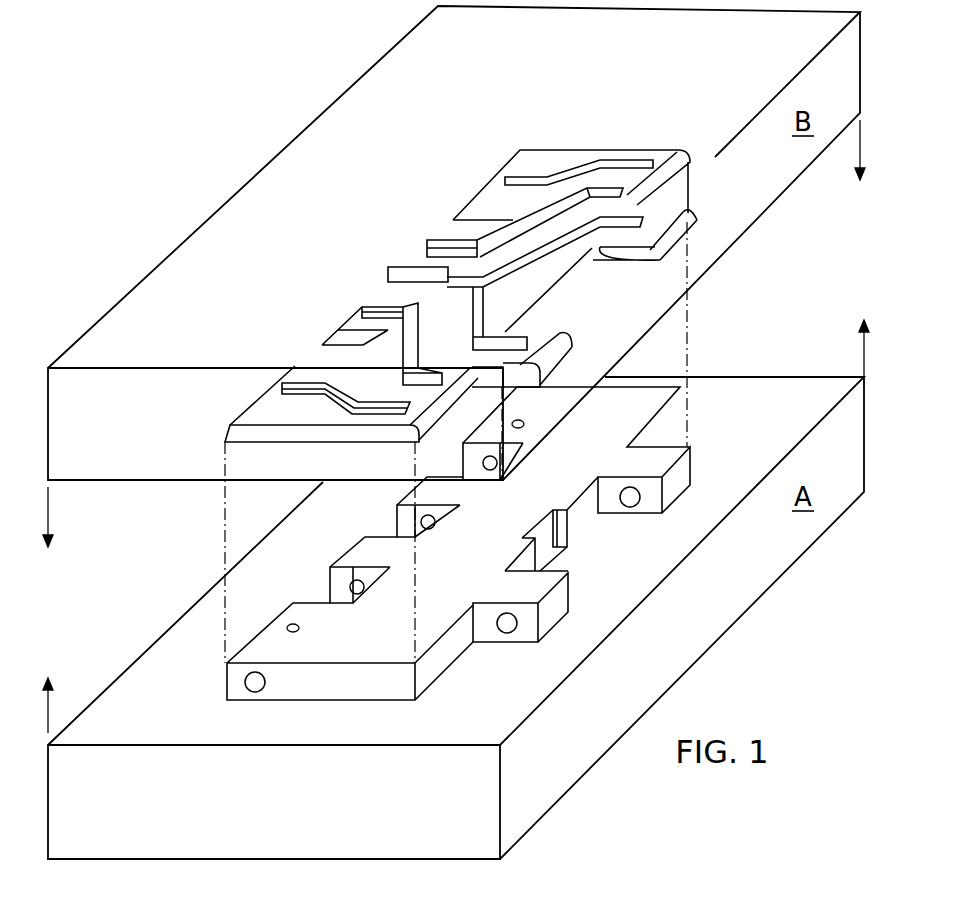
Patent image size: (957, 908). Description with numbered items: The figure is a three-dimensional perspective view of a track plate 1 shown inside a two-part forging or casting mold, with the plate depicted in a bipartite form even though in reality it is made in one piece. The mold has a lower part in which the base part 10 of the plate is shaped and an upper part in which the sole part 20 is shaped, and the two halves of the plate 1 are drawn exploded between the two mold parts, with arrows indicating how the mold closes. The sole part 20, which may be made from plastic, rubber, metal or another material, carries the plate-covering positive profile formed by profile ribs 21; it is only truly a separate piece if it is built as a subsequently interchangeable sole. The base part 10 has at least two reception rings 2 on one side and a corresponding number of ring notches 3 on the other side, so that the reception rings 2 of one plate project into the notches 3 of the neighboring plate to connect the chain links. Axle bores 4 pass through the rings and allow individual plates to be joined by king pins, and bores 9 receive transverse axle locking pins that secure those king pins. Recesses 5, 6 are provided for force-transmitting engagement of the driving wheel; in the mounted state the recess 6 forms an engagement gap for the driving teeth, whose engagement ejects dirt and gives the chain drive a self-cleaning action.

The track plate 1 is at (706, 291).
The reception rings 2 is at (687, 474).
The ring notches 3 is at (465, 470).
The axle bores 4 is at (250, 690).
The recess 5 is at (540, 530).
The recess 6 is at (400, 530).
The bores 9 is at (300, 627).
The base part 10 is at (212, 669).
The sole part 20 is at (552, 134).
The profile ribs 21 is at (380, 304).